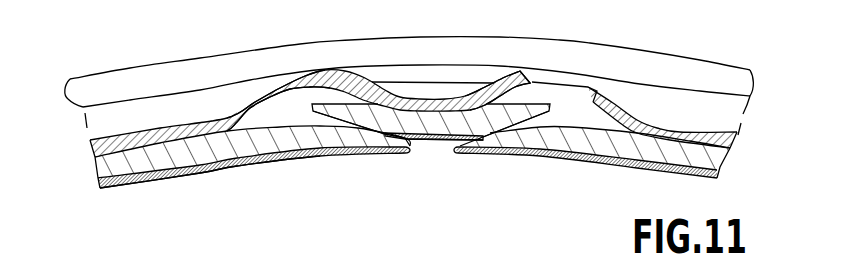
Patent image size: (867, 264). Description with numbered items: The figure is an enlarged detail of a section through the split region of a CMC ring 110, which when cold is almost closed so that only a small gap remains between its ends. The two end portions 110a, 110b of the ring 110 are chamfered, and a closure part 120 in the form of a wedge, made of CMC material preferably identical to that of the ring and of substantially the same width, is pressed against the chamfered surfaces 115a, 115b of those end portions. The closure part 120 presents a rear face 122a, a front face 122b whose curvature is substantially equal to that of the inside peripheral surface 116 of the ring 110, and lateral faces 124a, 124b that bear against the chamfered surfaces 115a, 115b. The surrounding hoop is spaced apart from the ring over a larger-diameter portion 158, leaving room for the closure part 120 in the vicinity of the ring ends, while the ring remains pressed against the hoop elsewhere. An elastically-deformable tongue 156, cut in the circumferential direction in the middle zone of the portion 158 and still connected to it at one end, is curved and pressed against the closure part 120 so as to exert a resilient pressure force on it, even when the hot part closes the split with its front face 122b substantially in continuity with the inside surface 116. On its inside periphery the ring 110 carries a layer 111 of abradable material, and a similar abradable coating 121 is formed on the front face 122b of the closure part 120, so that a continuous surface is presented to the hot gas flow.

The ring 110 is at (160, 160).
The end portion 110a is at (382, 149).
The end portion 110b is at (499, 148).
The layer of abradable material 111 is at (236, 167).
The inside peripheral surface 116 is at (128, 185).
The closure part 120 is at (466, 118).
The abradable coating 121 is at (417, 140).
The rear face 122a is at (536, 87).
The front face 122b is at (438, 140).
The lateral face 124a is at (357, 131).
The lateral face 124b is at (492, 141).
The elastically-deformable tongue 156 is at (384, 86).
The larger-diameter portion 158 is at (417, 74).
The chamfered surface 115a is at (319, 80).
The chamfered surface 115b is at (500, 89).